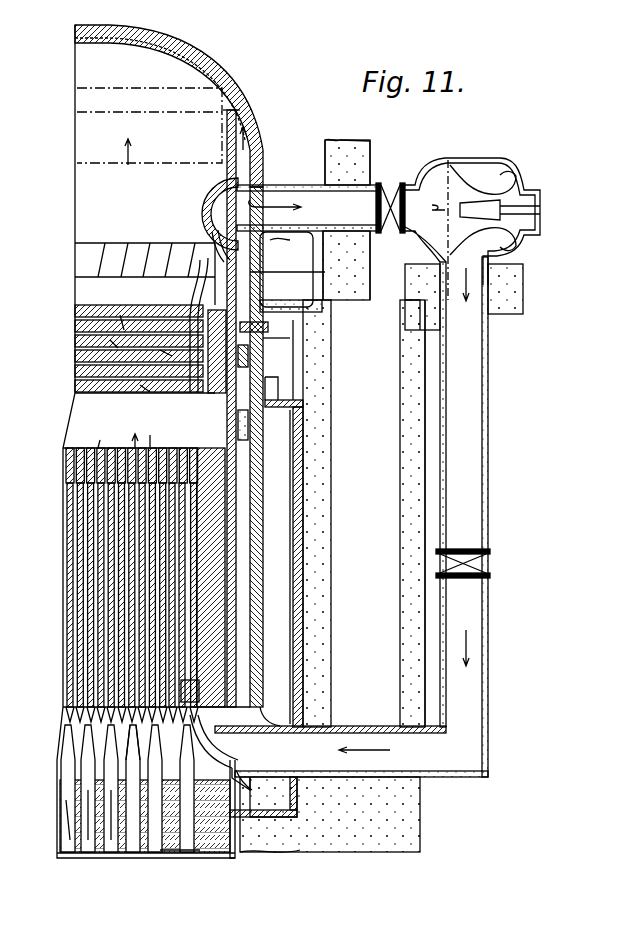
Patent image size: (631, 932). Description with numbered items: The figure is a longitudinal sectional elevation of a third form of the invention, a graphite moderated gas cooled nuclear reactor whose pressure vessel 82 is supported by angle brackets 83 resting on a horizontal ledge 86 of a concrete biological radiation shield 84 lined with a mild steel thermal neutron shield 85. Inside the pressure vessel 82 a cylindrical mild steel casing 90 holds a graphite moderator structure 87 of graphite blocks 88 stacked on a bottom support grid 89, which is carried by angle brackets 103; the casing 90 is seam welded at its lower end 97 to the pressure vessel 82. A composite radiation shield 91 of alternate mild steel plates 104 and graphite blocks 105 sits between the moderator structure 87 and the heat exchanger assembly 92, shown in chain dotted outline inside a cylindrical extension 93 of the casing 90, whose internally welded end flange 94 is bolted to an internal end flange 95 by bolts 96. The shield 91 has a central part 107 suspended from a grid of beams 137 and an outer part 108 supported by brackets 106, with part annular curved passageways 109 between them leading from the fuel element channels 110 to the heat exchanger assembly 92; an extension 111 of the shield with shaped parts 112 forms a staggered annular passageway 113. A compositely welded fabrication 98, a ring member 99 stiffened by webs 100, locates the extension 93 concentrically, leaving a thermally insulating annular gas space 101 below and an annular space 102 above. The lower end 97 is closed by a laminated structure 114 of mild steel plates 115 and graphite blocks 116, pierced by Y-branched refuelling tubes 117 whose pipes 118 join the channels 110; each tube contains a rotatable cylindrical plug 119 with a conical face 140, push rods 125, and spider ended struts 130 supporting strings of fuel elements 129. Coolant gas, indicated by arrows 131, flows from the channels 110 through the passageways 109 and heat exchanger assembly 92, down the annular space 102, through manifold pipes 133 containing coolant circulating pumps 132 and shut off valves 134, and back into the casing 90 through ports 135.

The pressure vessel 82 is at (255, 482).
The angle brackets 83 is at (282, 270).
The concrete biological radiation shield 84 is at (400, 352).
The thermal neutron shield 85 is at (300, 400).
The horizontal ledge 86 is at (322, 308).
The graphite moderator structure 87 is at (95, 436).
The graphite blocks 88 is at (190, 610).
The bottom support grid 89 is at (244, 716).
The cylindrical mild steel casing 90 is at (240, 428).
The composite radiation shield 91 is at (125, 370).
The heat exchanger assembly 92 is at (98, 88).
The cylindrical extension 93 is at (237, 152).
The end flange 94 is at (212, 234).
The internal end flange 95 is at (246, 286).
The bolts 96 is at (220, 286).
The lower end 97 is at (230, 860).
The compositely welded fabrication 98 is at (340, 280).
The ring member 99 is at (206, 212).
The webs 100 is at (304, 274).
The thermally insulating annular gas space 101 is at (240, 596).
The annular space 102 is at (258, 124).
The angle brackets 103 is at (263, 797).
The mild steel plates 104 is at (120, 360).
The graphite blocks 105 is at (142, 387).
The brackets 106 is at (281, 567).
The central part 107 is at (120, 328).
The outer part 108 is at (268, 327).
The part annular curved passageways 109 is at (172, 356).
The fuel element channels 110 is at (132, 566).
The extension 111 is at (280, 382).
The parts 112 is at (250, 355).
The staggered annular passageway 113 is at (292, 338).
The laminated structure 114 is at (70, 860).
The mild steel plates 115 is at (128, 862).
The graphite blocks 116 is at (64, 858).
The refuelling tubes 117 is at (88, 856).
The pipes 118 is at (215, 748).
The rotatable cylindrical plug 119 is at (184, 858).
The hollow push rods 125 is at (170, 862).
The fuel elements 129 is at (193, 573).
The spider ended struts 130 is at (198, 697).
The arrows 131 is at (232, 112).
The coolant circulating pumps 132 is at (472, 160).
The manifold pipes 133 is at (296, 188).
The shut off valves 134 is at (387, 194).
The ports 135 is at (226, 745).
The grid of beams 137 is at (106, 258).
The conical face 140 is at (118, 858).